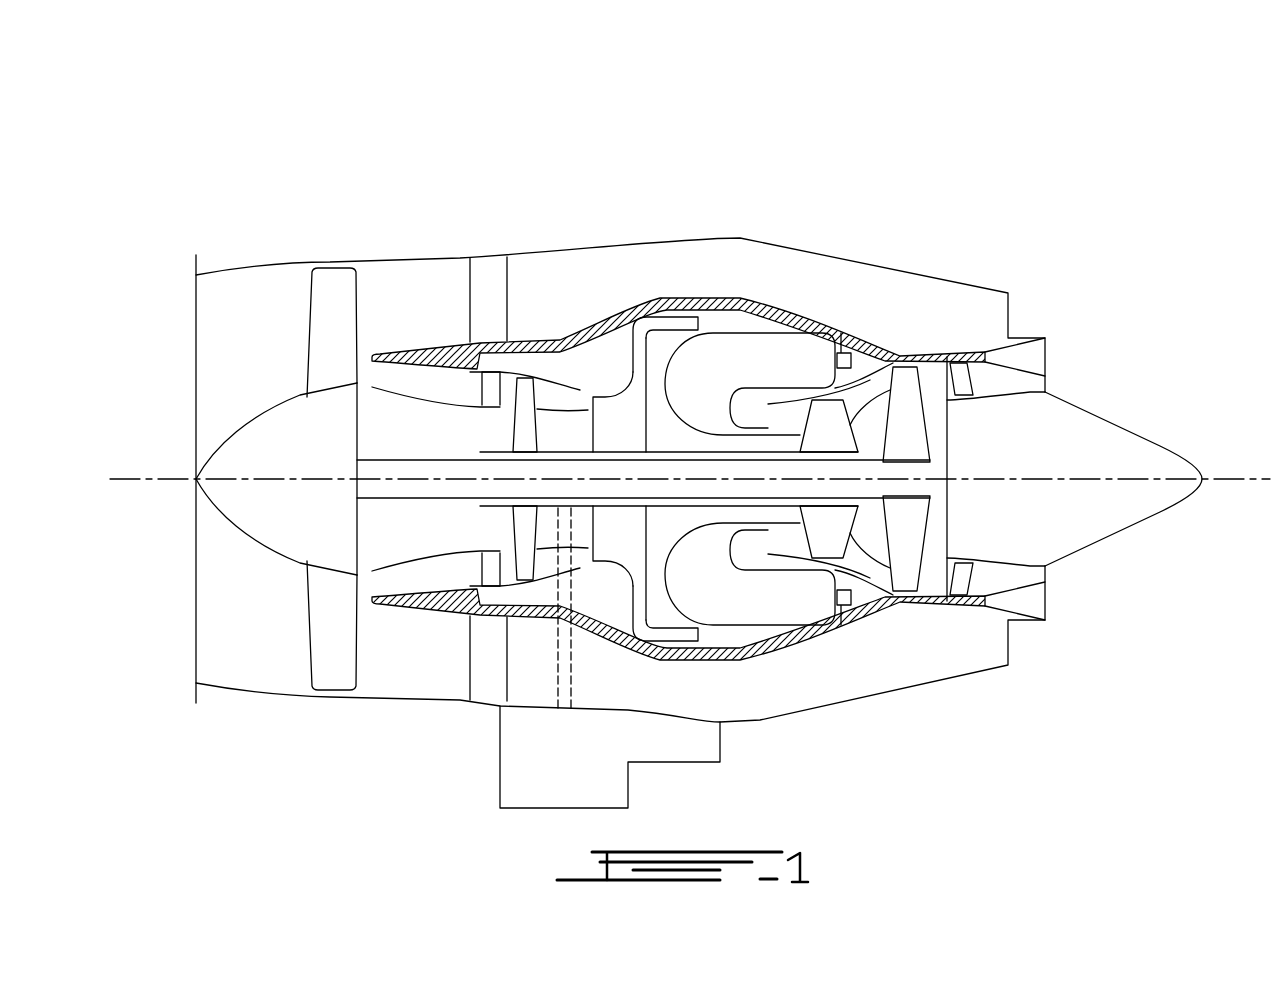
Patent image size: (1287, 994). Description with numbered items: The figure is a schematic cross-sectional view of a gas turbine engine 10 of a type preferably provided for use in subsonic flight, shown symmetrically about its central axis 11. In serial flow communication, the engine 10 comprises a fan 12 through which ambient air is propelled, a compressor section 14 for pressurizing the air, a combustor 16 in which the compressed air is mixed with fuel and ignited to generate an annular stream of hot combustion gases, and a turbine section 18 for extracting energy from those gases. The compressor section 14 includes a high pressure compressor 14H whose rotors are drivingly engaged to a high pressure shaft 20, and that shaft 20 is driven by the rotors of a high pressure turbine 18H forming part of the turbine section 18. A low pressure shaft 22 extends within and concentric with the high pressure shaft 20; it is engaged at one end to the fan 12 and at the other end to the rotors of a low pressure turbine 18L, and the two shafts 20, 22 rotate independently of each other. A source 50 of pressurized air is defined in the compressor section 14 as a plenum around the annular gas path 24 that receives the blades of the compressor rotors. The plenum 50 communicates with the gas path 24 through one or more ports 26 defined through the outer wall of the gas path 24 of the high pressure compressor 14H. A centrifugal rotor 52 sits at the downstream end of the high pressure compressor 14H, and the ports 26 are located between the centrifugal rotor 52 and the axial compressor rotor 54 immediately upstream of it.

The gas turbine engine 10 is at (888, 178).
The engine centerline axis 11 is at (1235, 479).
The fan 12 is at (327, 617).
The compressor section 14 is at (572, 192).
The high pressure compressor 14H is at (557, 390).
The combustor 16 is at (752, 353).
The turbine section 18 is at (867, 545).
The high pressure turbine 18H is at (828, 538).
The low pressure turbine 18L is at (908, 598).
The high pressure shaft 20 is at (700, 512).
The low pressure shaft 22 is at (413, 498).
The annular gas path 24 is at (430, 388).
The port 26 is at (578, 390).
The source of pressurized air 50 is at (613, 355).
The centrifugal rotor 52 is at (622, 545).
The axial compressor rotor 54 is at (527, 565).